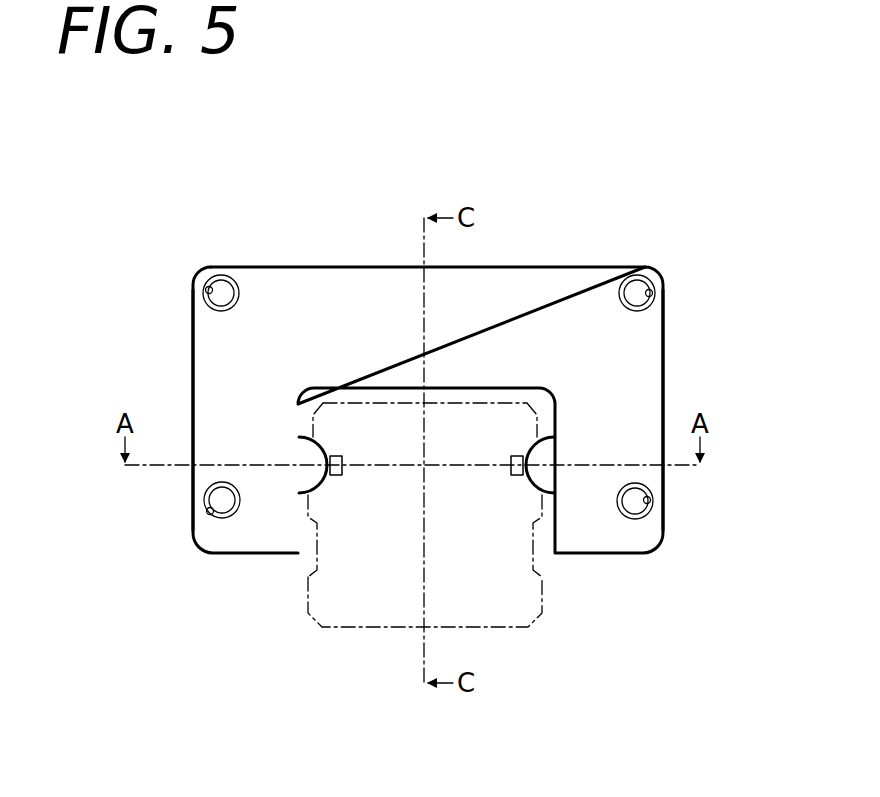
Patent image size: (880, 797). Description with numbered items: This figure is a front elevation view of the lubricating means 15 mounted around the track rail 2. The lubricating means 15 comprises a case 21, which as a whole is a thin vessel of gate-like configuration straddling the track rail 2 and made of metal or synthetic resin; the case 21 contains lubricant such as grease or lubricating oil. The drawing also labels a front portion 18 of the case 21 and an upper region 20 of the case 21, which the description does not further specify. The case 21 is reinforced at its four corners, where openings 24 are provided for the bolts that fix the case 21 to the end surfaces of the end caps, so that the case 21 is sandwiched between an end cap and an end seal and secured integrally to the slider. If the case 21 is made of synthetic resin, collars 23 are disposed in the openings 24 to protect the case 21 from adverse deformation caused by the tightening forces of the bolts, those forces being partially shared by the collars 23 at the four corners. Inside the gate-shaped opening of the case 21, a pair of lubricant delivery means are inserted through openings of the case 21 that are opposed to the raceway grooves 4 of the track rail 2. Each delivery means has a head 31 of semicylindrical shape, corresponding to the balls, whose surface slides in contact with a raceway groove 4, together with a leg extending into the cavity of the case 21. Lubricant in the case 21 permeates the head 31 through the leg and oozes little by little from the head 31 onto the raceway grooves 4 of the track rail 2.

The track rail 2 is at (397, 593).
The raceway grooves 4 is at (307, 492).
The lubricating means 15 is at (427, 375).
The end plate 18 is at (330, 297).
The upper surface of end plate 20 is at (578, 265).
The case 21 is at (193, 368).
The collars 23 is at (222, 276).
The openings 24 is at (206, 289).
The head 31 is at (312, 476).